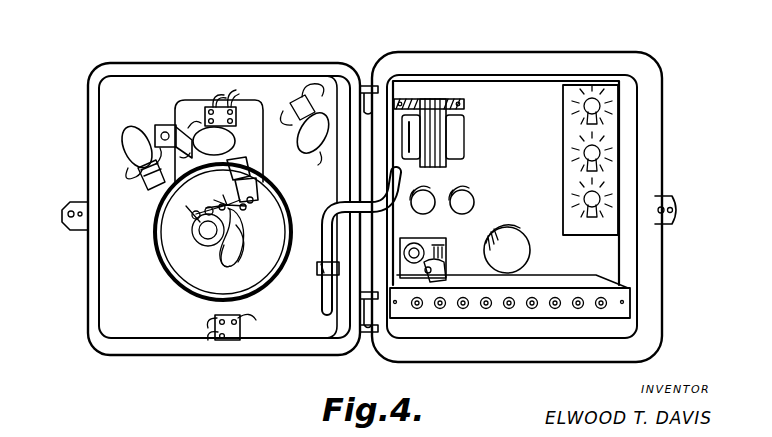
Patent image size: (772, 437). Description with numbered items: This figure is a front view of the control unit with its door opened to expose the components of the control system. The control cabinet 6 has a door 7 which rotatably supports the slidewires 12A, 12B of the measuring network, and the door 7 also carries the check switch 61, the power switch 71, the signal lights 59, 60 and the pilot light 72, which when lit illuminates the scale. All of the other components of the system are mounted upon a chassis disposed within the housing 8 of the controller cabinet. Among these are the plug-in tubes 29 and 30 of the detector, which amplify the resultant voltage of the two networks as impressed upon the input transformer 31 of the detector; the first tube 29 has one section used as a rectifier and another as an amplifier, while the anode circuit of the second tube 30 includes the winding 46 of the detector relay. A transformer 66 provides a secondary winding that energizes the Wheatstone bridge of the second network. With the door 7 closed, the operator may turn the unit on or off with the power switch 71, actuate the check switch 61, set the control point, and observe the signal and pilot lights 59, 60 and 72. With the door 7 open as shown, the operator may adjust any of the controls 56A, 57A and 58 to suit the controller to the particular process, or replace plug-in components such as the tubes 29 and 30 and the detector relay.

The control cabinet 6 is at (170, 57).
The door 7 is at (100, 250).
The housing 8 is at (636, 251).
The slidewire 12A is at (157, 220).
The slidewire 12B is at (170, 266).
The tube 29 is at (421, 210).
The tube 30 is at (470, 197).
The input transformer 31 is at (510, 240).
The relay winding 46 is at (444, 266).
The control 56A is at (605, 107).
The control 57A is at (605, 156).
The control 58 is at (605, 201).
The signal light 59 is at (135, 150).
The signal light 60 is at (315, 154).
The check switch 61 is at (222, 341).
The transformer 66 is at (456, 118).
The power switch 71 is at (233, 108).
The pilot light 72 is at (236, 143).